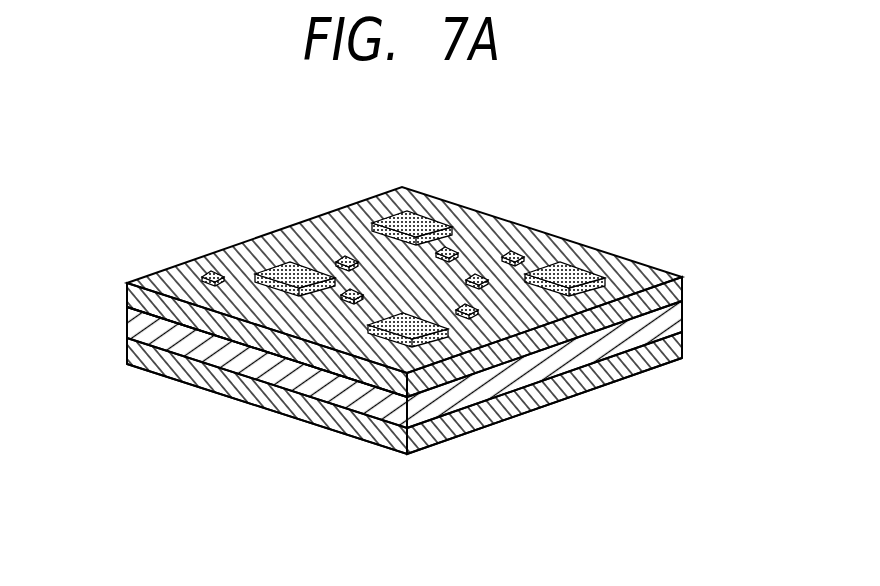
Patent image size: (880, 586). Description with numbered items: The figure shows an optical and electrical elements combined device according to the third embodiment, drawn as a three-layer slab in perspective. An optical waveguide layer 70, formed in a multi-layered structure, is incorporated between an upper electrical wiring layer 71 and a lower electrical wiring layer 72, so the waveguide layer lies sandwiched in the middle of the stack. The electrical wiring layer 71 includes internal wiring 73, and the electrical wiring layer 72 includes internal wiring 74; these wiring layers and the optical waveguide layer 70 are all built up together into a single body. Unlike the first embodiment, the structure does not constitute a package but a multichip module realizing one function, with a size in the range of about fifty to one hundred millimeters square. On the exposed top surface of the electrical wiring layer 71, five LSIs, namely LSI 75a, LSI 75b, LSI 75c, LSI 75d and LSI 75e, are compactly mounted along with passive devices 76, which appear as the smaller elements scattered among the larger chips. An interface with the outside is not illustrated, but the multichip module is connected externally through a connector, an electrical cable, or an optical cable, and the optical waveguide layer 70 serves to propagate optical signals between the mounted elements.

The optical waveguide layer 70 is at (682, 325).
The electrical wiring layer 71 is at (684, 290).
The electrical wiring layer 72 is at (672, 350).
The internal wiring 73 is at (132, 321).
The internal wiring 74 is at (173, 380).
The LSI 1 75a is at (452, 252).
The LSI 2 75b is at (284, 262).
The LSI 3 75c is at (456, 342).
The LSI 4 75d is at (402, 212).
The LSI 5 75e is at (577, 262).
The passive devices 76 is at (516, 252).